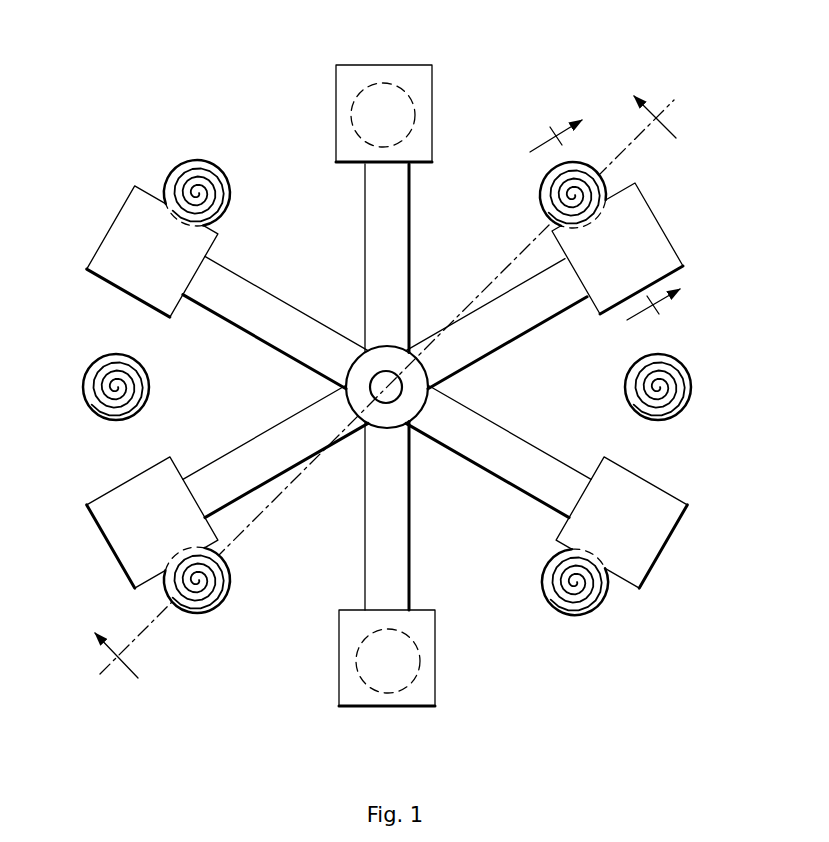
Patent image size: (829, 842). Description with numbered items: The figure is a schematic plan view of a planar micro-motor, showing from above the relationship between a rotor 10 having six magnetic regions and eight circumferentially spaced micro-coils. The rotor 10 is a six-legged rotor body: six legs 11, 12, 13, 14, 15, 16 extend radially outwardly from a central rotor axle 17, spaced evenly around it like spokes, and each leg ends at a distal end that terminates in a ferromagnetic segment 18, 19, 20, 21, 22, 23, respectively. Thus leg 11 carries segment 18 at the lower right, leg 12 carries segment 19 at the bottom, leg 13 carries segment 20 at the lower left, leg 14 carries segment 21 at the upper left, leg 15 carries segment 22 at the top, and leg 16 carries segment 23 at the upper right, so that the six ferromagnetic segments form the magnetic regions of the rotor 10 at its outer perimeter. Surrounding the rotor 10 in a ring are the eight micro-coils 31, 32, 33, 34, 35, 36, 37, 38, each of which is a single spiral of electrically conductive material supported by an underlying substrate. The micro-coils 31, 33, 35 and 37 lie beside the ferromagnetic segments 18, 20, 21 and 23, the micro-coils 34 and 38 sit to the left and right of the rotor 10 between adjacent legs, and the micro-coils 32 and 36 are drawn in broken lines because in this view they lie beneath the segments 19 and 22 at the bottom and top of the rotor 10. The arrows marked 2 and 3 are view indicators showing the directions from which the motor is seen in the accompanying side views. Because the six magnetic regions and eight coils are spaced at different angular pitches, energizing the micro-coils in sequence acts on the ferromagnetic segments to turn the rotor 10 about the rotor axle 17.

The rotor 10 is at (708, 528).
The leg 11 is at (557, 460).
The leg 12 is at (410, 562).
The leg 13 is at (324, 454).
The leg 14 is at (220, 316).
The leg 15 is at (365, 207).
The leg 16 is at (524, 282).
The rotor axle 17 is at (385, 378).
The ferromagnetic segment 18 is at (648, 573).
The ferromagnetic segment 19 is at (436, 670).
The ferromagnetic segment 20 is at (121, 566).
The ferromagnetic segment 21 is at (116, 218).
The ferromagnetic segment 22 is at (410, 65).
The ferromagnetic segment 23 is at (674, 248).
The micro-coil 31 is at (570, 615).
The micro-coil 32 is at (410, 684).
The micro-coil 33 is at (194, 613).
The micro-coil 34 is at (93, 365).
The micro-coil 35 is at (198, 161).
The micro-coil 36 is at (383, 85).
The micro-coil 37 is at (600, 180).
The micro-coil 38 is at (686, 371).
The section line 2- 2 is at (390, 397).
The section line 3- 3 is at (597, 227).